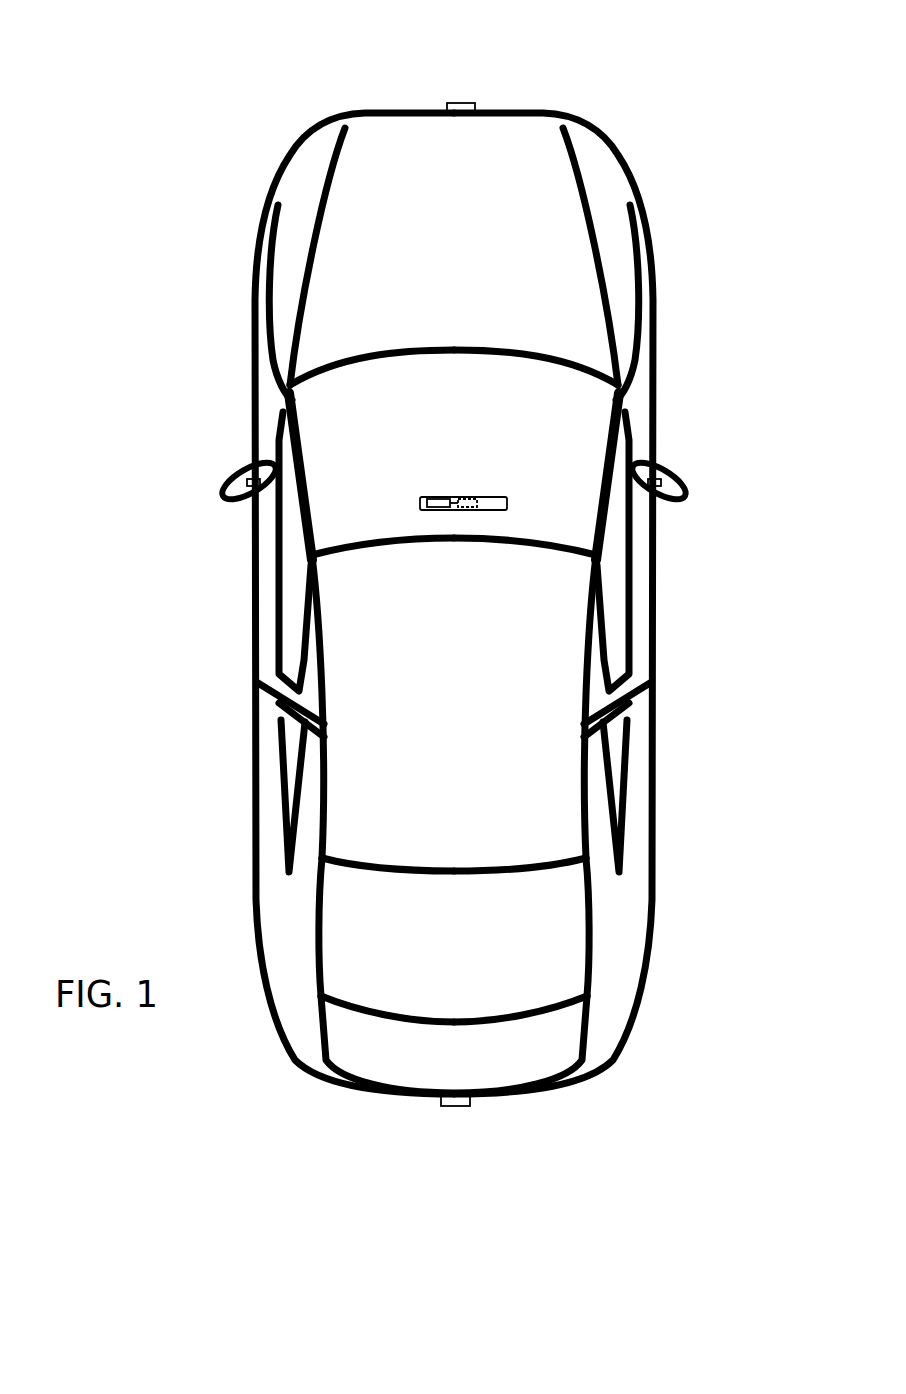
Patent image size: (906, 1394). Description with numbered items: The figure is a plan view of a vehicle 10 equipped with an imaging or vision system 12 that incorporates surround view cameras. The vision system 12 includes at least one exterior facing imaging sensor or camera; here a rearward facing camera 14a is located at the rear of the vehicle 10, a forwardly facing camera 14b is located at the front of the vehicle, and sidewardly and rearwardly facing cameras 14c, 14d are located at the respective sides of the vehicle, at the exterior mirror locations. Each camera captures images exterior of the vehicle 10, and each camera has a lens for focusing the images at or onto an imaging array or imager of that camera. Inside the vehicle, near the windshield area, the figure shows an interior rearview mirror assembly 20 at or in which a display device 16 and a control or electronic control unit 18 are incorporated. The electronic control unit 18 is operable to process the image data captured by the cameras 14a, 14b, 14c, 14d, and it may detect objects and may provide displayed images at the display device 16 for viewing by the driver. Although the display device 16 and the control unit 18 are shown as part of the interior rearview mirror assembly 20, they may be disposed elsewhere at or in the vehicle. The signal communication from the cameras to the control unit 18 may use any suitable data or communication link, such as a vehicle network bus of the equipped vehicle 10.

The vehicle 10 is at (205, 207).
The vision system 12 is at (398, 1131).
The rearward facing camera 14a is at (458, 1106).
The forwardly facing camera 14b is at (474, 103).
The sidewardly/rearwardly facing camera 14c is at (248, 482).
The sidewardly/rearwardly facing camera 14d is at (663, 484).
The display device 16 is at (438, 501).
The electronic control unit 18 is at (460, 497).
The interior rearview mirror assembly 20 is at (510, 498).